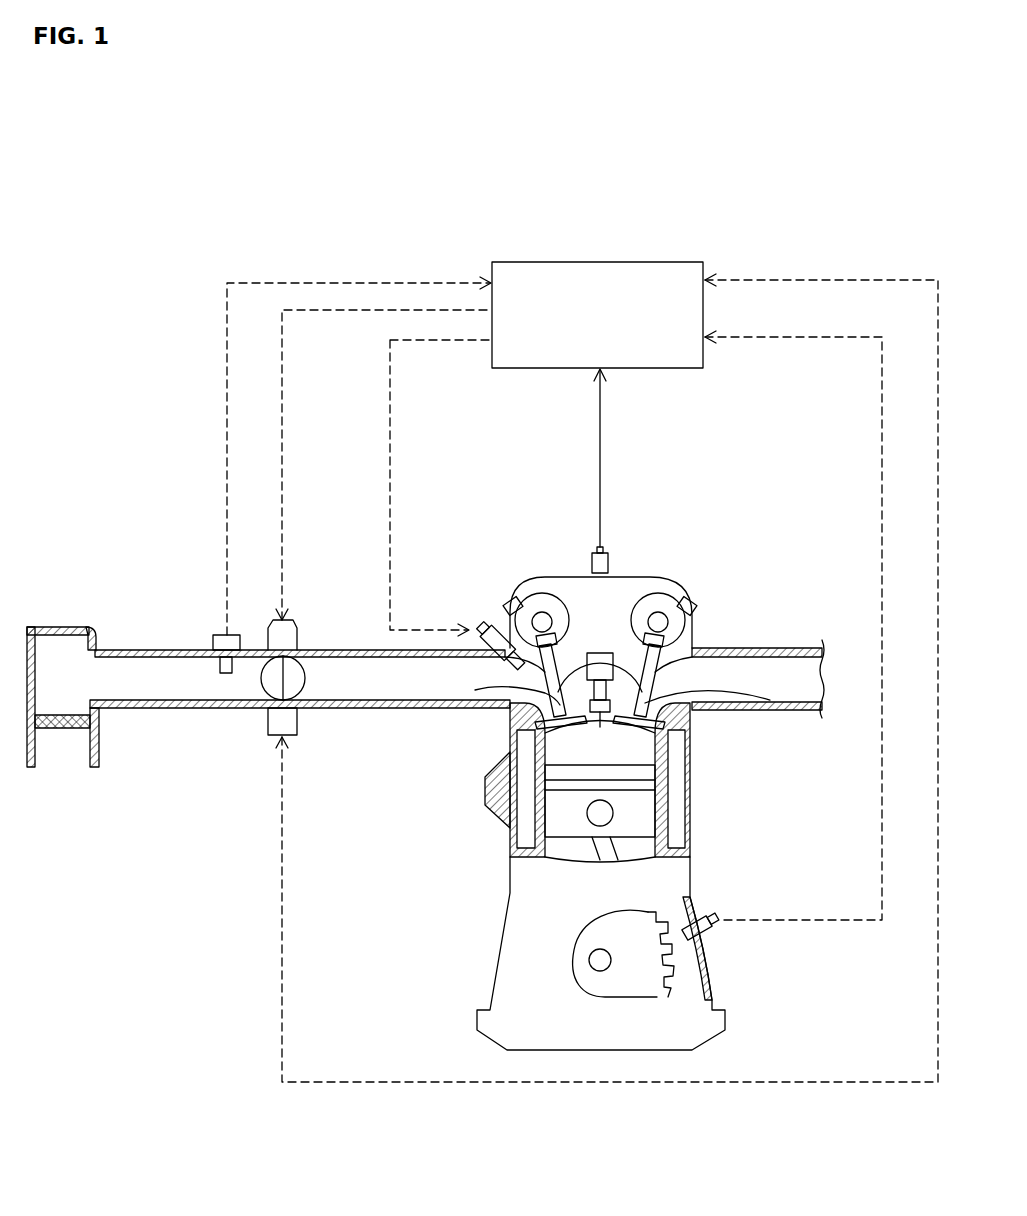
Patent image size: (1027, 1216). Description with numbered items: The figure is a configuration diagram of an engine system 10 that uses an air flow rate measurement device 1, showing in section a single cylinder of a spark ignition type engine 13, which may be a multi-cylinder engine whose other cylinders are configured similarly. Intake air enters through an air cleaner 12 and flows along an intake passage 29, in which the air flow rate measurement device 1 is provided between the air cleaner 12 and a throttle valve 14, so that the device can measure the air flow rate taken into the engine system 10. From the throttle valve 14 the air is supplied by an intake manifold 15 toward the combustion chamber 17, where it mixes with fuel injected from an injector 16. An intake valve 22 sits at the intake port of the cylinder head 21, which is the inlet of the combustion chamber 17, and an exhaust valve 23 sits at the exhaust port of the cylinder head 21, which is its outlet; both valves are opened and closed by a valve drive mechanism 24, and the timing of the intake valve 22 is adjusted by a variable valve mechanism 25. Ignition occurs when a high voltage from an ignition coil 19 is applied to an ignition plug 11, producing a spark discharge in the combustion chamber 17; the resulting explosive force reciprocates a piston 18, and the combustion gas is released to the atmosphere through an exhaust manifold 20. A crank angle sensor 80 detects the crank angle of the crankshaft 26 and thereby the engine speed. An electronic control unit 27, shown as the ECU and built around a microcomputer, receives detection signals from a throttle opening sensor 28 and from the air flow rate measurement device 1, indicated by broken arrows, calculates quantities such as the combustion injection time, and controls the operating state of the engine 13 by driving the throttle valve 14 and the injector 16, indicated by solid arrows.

The engine system 10 is at (139, 452).
The electronic control unit 27 is at (662, 370).
The air cleaner 12 is at (60, 717).
The intake passage 29 is at (157, 664).
The intake manifold 15 is at (385, 708).
The air flow rate measurement device 1 is at (214, 623).
The throttle valve 14 is at (300, 677).
The throttle opening sensor 28 is at (269, 722).
The engine 13 is at (565, 572).
The combustion chamber 17 is at (623, 747).
The variable valve mechanism 25 is at (540, 600).
The cylinder head 21 is at (672, 590).
The valve drive mechanism 24 is at (512, 604).
The injector 16 is at (480, 628).
The intake valve 22 is at (495, 692).
The ignition coil 19 is at (612, 565).
The exhaust manifold 20 is at (790, 712).
The exhaust valve 23 is at (742, 700).
The ignition plug 11 is at (693, 747).
The piston 18 is at (633, 810).
The crankshaft 26 is at (612, 962).
The crank angle sensor 80 is at (710, 915).